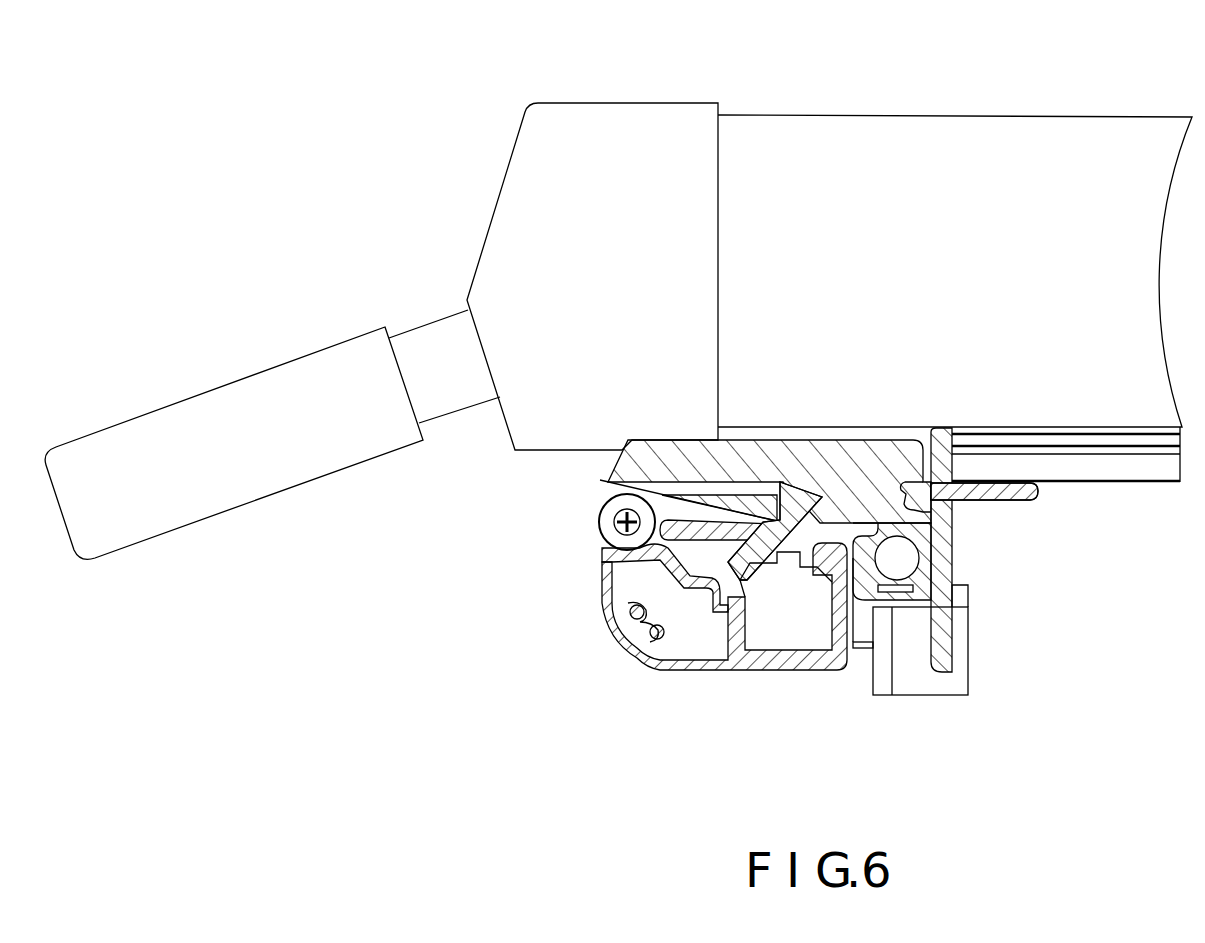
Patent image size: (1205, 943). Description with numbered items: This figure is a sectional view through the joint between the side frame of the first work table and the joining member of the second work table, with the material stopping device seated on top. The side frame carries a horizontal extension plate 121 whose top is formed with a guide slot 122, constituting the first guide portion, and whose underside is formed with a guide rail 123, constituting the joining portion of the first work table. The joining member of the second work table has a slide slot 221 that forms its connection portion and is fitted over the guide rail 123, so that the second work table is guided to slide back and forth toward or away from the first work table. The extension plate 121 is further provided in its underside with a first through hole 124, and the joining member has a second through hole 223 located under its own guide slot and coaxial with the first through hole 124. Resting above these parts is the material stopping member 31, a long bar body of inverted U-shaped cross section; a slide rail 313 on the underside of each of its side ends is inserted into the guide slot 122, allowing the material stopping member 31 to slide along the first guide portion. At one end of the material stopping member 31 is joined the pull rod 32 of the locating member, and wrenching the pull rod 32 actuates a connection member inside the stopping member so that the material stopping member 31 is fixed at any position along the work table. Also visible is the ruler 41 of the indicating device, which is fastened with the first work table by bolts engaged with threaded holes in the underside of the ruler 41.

The material stopping member 31 is at (847, 133).
The pull rod 32 is at (147, 418).
The ruler 41 is at (683, 500).
The horizontal extension plate 121 is at (703, 535).
The guide slot 122 is at (925, 495).
The guide rail 123 is at (760, 570).
The first through hole 124 is at (995, 586).
The second through hole 223 is at (930, 588).
The slide slot 221 is at (745, 548).
The slide rail 313 is at (923, 510).